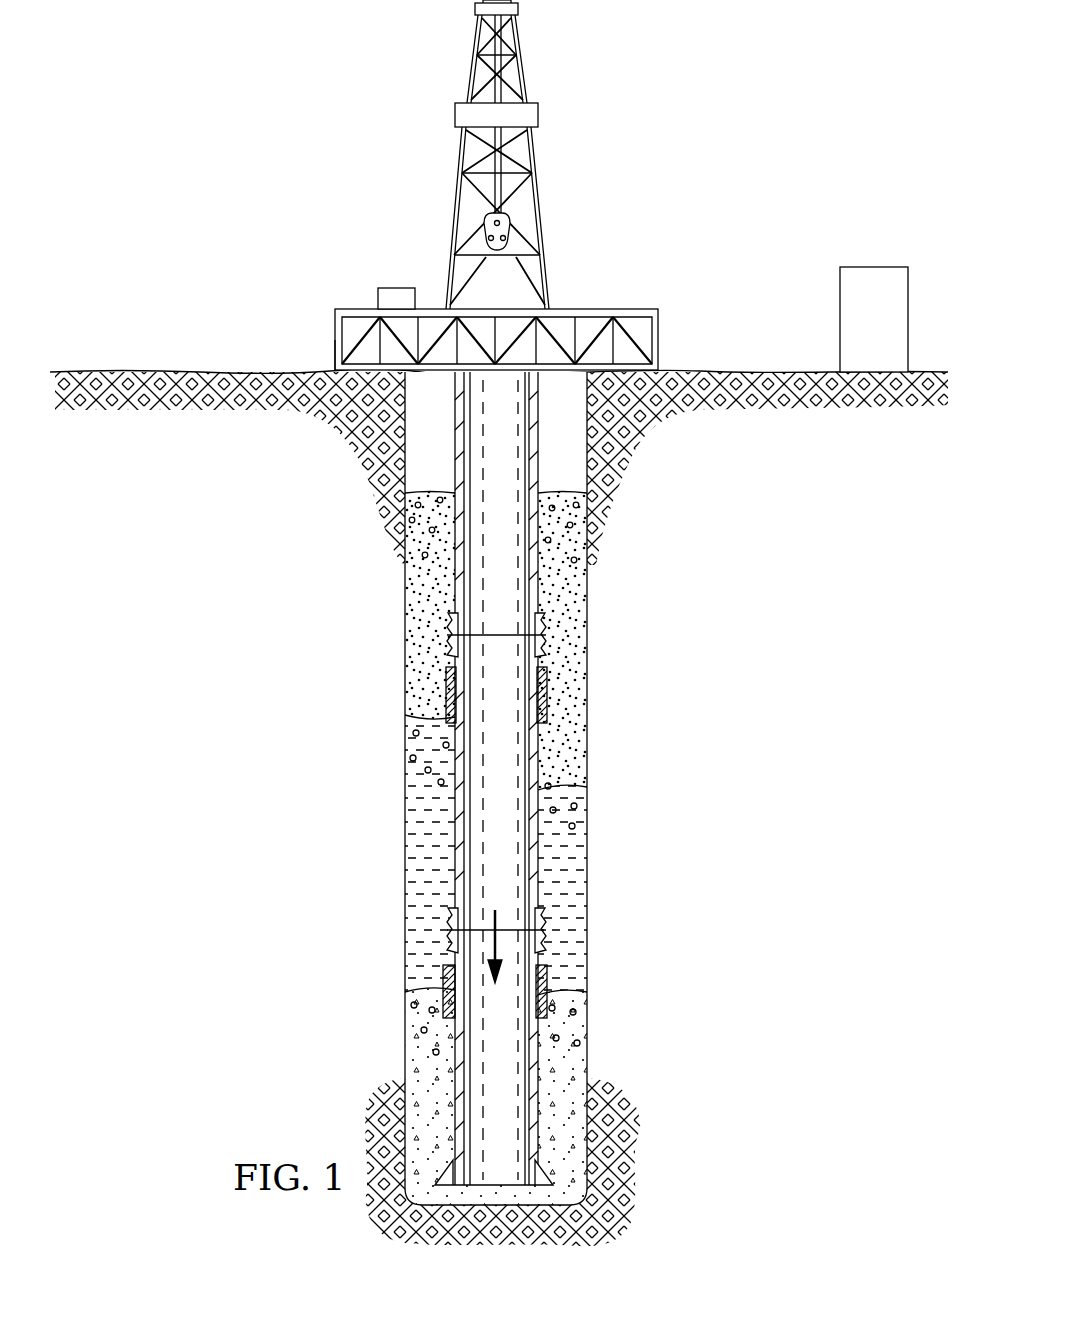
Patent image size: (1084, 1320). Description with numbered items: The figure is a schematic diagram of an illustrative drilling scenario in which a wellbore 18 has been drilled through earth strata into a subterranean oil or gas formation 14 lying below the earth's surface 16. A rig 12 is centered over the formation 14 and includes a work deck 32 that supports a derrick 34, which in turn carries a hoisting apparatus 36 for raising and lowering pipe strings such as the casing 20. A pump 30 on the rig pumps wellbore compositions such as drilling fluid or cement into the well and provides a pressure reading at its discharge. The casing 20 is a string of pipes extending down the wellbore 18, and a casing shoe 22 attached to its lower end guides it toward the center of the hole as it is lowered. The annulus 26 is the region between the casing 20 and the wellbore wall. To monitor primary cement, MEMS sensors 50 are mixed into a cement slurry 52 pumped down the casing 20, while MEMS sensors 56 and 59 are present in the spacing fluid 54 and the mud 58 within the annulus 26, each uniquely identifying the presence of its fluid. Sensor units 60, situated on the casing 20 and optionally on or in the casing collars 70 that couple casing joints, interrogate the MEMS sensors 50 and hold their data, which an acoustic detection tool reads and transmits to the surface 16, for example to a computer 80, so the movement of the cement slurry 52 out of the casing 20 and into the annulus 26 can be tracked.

The rig 12 is at (659, 340).
The subterranean oil or gas formation 14 is at (296, 537).
The earth's surface 16 is at (765, 372).
The wellbore 18 is at (405, 600).
The casing 20 is at (538, 422).
The casing shoe 22 is at (545, 1165).
The annulus 26 is at (423, 827).
The pump 30 is at (398, 288).
The work deck 32 is at (335, 336).
The derrick 34 is at (528, 75).
The hoisting apparatus 36 is at (510, 242).
The MEMS sensors 50 is at (562, 1000).
The cement slurry 52 is at (572, 1067).
The spacing fluid 54 is at (570, 872).
The MEMS sensors 56 is at (573, 827).
The mud 58 is at (570, 597).
The MEMS sensors 59 is at (568, 528).
The sensor unit 60 is at (547, 697).
The casing collars 70 is at (543, 628).
The computer 80 is at (872, 267).